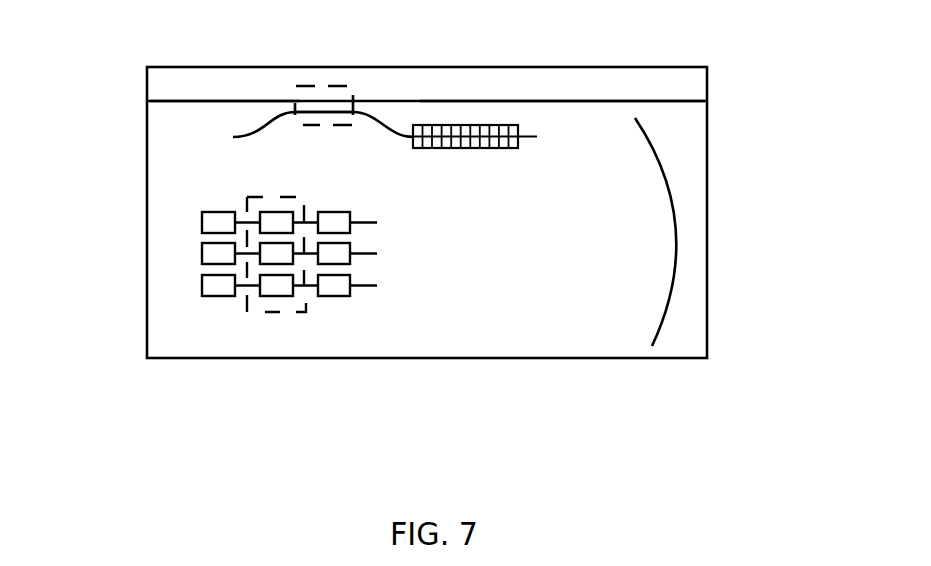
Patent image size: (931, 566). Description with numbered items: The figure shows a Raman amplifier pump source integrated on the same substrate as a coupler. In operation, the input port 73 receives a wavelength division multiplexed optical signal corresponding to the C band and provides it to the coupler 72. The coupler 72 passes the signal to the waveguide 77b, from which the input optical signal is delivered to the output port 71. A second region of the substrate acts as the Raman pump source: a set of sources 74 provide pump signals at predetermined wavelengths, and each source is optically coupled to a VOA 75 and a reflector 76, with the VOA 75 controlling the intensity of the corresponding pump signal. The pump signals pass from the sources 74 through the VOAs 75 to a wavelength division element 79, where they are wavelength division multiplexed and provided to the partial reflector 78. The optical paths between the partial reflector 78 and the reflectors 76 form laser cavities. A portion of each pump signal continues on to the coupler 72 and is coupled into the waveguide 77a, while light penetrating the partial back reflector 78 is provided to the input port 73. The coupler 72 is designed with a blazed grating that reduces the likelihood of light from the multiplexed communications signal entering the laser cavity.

The output port 71 is at (708, 97).
The coupler 72 is at (348, 86).
The input port 73 is at (158, 100).
The sources 74 is at (275, 297).
The VOA 75 is at (335, 297).
The reflector 76 is at (218, 297).
The waveguide 77a is at (225, 100).
The waveguide 77b is at (503, 100).
The partial reflector 78 is at (462, 148).
The wavelength division element 79 is at (676, 225).